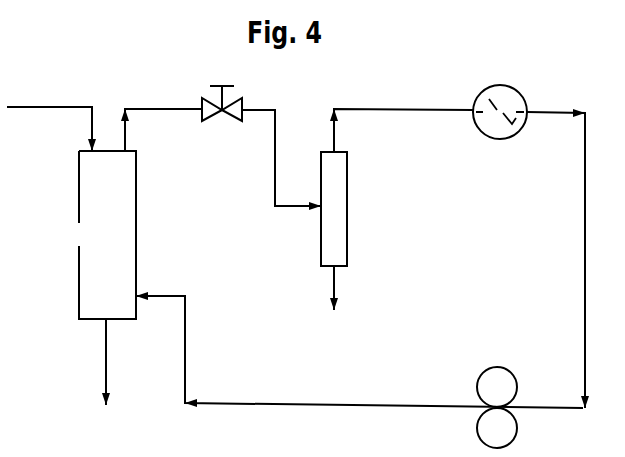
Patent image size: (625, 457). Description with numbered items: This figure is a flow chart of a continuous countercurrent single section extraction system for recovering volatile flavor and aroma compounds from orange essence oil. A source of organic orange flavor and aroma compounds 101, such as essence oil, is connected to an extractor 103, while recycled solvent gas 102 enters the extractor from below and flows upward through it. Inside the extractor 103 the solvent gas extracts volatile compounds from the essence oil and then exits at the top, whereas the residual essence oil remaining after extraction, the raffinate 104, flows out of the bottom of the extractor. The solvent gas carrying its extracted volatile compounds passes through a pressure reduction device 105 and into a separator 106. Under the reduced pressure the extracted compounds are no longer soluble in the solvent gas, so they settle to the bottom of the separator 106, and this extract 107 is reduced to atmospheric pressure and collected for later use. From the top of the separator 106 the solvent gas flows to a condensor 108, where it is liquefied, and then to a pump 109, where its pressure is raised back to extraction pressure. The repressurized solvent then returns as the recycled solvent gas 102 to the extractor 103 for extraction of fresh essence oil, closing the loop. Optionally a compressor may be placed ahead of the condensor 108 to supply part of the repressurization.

The source of organic orange flavor and aroma compounds 101 is at (58, 106).
The recycled solvent gas 102 is at (186, 330).
The extractor 103 is at (125, 222).
The raffinate 104 is at (105, 378).
The pressure reduction device 105 is at (223, 112).
The separator 106 is at (348, 183).
The extract 107 is at (335, 294).
The condensor 108 is at (481, 130).
The pump 109 is at (476, 427).